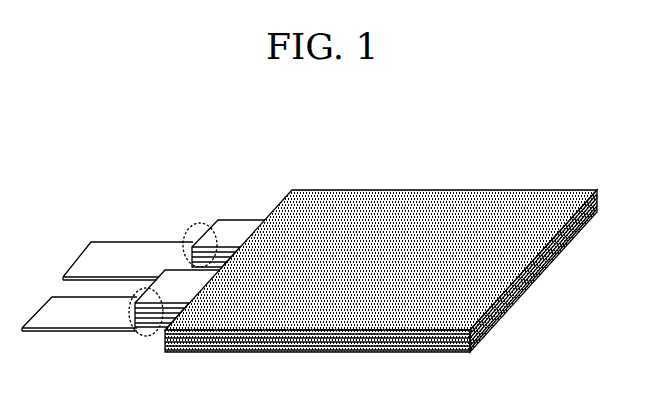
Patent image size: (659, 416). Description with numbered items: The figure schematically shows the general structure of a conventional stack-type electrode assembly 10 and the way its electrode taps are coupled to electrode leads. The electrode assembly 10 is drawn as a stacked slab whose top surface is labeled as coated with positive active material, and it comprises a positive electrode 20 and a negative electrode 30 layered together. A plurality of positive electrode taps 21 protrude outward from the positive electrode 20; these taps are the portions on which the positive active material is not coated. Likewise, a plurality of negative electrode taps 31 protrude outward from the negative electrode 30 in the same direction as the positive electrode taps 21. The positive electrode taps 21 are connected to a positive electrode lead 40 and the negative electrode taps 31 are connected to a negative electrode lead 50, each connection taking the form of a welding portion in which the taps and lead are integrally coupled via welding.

The electrode assembly 10 is at (60, 174).
The positive electrode 20 is at (201, 353).
The negative electrode 30 is at (224, 352).
The positive electrode taps 21 is at (131, 318).
The negative electrode taps 31 is at (193, 227).
The positive electrode lead 40 is at (79, 314).
The negative electrode lead 50 is at (128, 261).